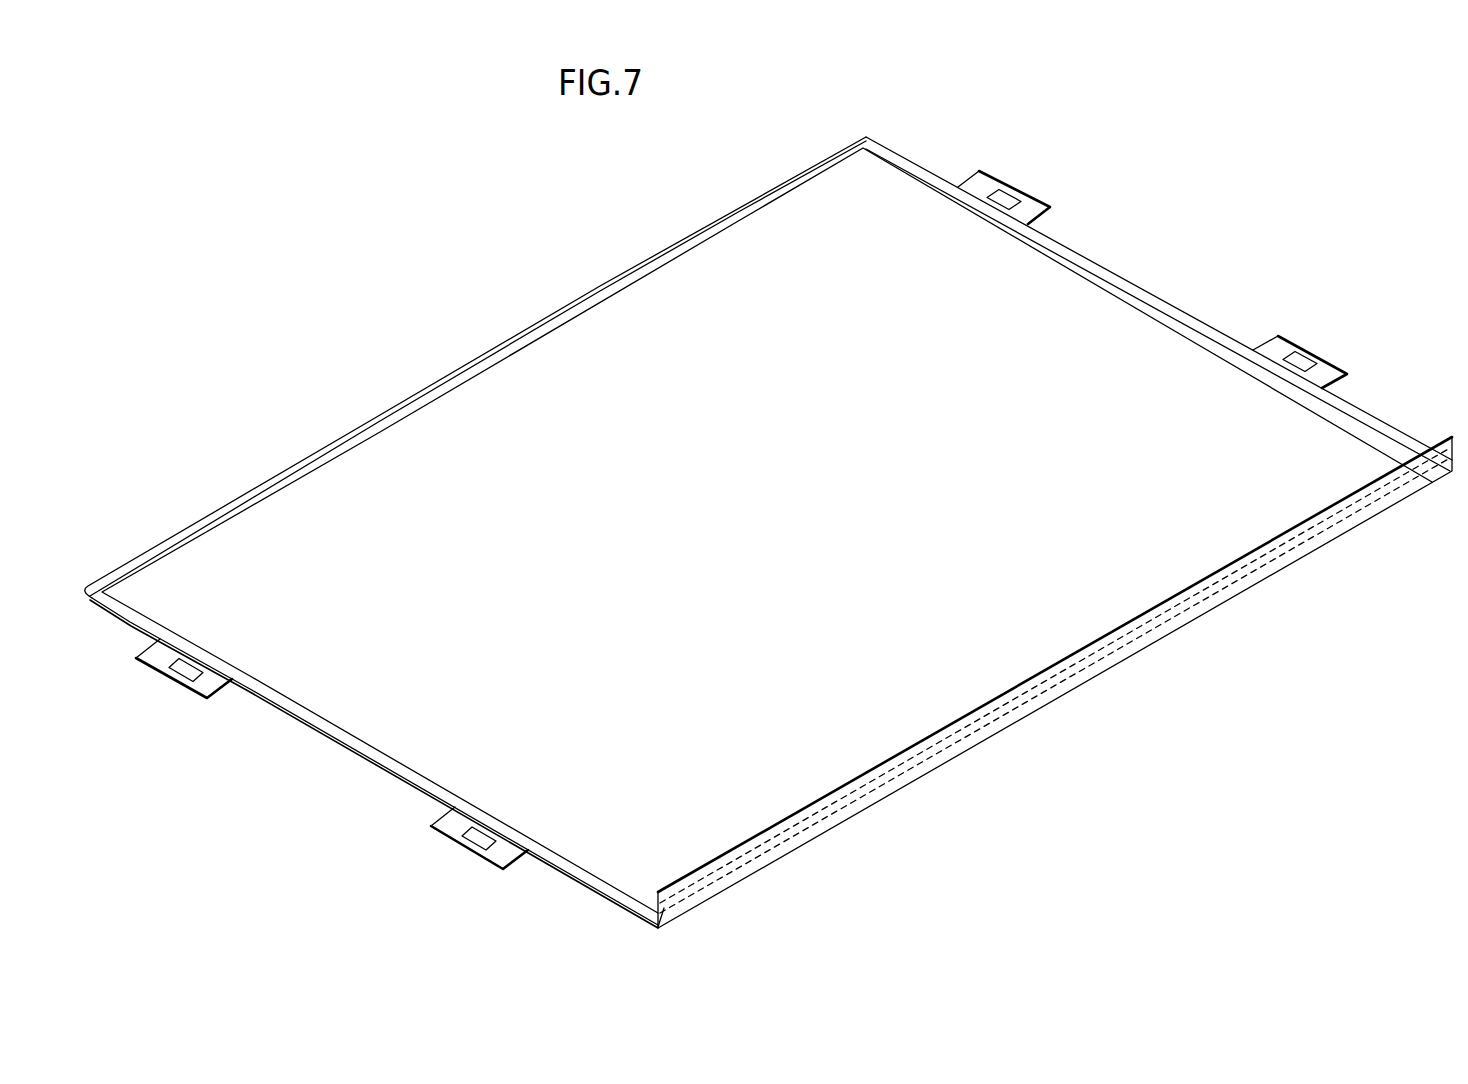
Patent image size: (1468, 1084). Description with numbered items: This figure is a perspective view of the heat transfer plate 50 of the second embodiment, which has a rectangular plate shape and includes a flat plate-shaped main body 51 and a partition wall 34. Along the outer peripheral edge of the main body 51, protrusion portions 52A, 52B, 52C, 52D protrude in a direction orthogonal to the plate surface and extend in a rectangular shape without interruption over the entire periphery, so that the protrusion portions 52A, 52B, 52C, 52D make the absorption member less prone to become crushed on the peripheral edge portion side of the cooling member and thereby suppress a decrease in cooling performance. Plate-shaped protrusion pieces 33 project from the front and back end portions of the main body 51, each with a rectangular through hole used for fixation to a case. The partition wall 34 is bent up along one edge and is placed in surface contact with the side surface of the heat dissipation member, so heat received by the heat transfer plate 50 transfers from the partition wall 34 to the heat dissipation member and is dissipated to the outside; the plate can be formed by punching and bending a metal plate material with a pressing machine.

The heat transfer plate 50 is at (479, 215).
The main body 51 is at (890, 225).
The protrusion portion 52A is at (348, 738).
The protrusion portion 52B is at (445, 390).
The protrusion portion 52C is at (1115, 293).
The protrusion portion 52D is at (1200, 603).
The protrusion piece 33 is at (1033, 203).
The partition wall 34 is at (1432, 447).